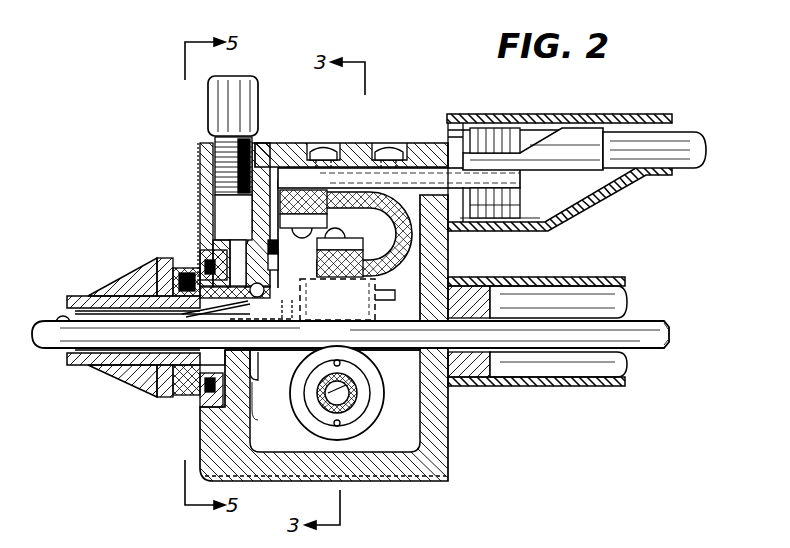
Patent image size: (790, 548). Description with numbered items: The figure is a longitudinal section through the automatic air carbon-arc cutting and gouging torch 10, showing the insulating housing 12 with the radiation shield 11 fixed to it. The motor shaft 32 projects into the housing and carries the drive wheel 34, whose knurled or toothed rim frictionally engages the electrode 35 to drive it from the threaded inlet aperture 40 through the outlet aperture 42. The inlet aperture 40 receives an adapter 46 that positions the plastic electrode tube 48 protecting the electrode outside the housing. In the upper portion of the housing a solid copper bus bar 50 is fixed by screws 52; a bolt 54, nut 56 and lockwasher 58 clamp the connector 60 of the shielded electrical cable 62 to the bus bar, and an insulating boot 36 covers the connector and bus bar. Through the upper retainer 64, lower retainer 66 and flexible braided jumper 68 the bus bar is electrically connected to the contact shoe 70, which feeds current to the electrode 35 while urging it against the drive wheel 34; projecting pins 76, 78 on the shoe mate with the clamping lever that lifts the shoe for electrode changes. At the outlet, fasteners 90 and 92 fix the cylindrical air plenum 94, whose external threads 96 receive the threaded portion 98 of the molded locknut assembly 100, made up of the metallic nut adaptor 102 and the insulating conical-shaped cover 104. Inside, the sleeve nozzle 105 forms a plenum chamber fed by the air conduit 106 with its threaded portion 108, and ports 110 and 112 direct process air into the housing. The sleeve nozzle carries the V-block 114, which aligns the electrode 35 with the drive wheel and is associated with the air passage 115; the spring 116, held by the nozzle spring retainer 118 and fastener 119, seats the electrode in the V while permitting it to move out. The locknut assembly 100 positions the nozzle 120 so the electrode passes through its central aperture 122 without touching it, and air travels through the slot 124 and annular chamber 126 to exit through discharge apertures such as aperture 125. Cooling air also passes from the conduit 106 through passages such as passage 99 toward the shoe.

The automatic air carbon-arc cutting and gouging torch 10 is at (401, 140).
The radiation shield 11 is at (200, 150).
The housing 12 is at (278, 143).
The shaft 32 is at (322, 416).
The drive wheel 34 is at (380, 412).
The electrode 35 is at (58, 351).
The boot 36 is at (581, 116).
The inlet aperture 40 is at (422, 362).
The outlet aperture 42 is at (337, 394).
The adapter 46 is at (468, 390).
The electrode tube 48 is at (575, 394).
The bus bar 50 is at (535, 180).
The screws 52 is at (322, 144).
The bolt 54 is at (510, 135).
The nut 56 is at (515, 233).
The lockwasher 58 is at (519, 206).
The connector 60 is at (605, 200).
The shielded electrical cable 62 is at (693, 134).
The upper retainer 64 is at (313, 216).
The lower retainer 66 is at (355, 259).
The flexible braided jumper 68 is at (389, 233).
The contact shoe 70 is at (337, 299).
The projecting pin 76 is at (384, 302).
The projecting pin 78 is at (286, 318).
The fastener 90 is at (206, 416).
The fastener 92 is at (212, 252).
The air plenum 94 is at (196, 396).
The threads 96 is at (178, 270).
The threaded portion 98 is at (192, 268).
The rail 99 is at (305, 184).
The molded locknut assembly 100 is at (123, 266).
The metallic nut adaptor 102 is at (161, 268).
The insulating conical-shaped cover 104 is at (170, 398).
The sleeve nozzle 105 is at (255, 408).
The air conduit 106 is at (213, 193).
The threaded portion 108 is at (226, 166).
The port 110 is at (170, 315).
The port 112 is at (260, 325).
The V-block 114 is at (258, 352).
The air passage 115 is at (194, 319).
The spring 116 is at (233, 300).
The nozzle spring retainer 118 is at (278, 246).
The fastener 119 is at (278, 262).
The nozzle 120 is at (80, 298).
The central aperture 122 is at (62, 316).
The slot 124 is at (148, 386).
The aperture 125 is at (90, 366).
The annular chamber 126 is at (121, 373).